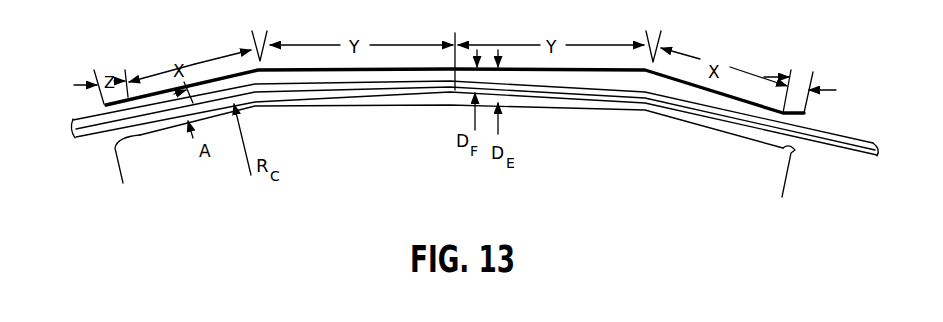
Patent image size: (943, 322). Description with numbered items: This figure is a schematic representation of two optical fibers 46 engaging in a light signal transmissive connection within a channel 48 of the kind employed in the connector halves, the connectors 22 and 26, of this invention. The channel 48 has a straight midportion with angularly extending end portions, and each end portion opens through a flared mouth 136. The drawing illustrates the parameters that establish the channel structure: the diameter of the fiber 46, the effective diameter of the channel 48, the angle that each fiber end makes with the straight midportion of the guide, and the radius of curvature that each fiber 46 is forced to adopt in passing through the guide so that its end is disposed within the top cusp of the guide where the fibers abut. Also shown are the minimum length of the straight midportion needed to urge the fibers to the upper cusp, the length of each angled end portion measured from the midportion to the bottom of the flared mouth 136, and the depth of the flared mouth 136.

The connector 22 is at (316, 108).
The connector 26 is at (591, 113).
The fiber 46 is at (82, 121).
The channel 48 is at (433, 98).
The flared mouth 136 is at (797, 149).